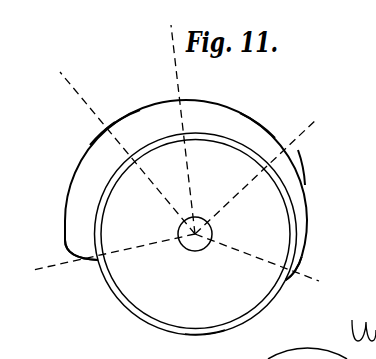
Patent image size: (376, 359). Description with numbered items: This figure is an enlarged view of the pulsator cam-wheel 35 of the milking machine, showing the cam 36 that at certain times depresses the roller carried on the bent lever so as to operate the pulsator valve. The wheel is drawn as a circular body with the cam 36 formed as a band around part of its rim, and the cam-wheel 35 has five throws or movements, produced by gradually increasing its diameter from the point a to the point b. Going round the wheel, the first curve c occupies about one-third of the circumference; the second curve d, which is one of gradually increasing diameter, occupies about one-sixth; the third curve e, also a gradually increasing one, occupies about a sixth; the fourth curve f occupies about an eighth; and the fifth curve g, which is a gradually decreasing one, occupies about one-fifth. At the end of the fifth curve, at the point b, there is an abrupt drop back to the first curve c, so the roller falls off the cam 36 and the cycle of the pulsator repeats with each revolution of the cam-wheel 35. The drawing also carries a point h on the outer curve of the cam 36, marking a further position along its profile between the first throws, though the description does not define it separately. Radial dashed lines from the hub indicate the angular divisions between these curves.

The cam-wheel 35 is at (133, 294).
The cam 36 is at (200, 107).
The point a is at (303, 266).
The point b is at (66, 243).
The first curve c is at (215, 331).
The second curve d is at (297, 164).
The third curve e is at (260, 124).
The fourth curve f is at (122, 117).
The fifth curve g is at (65, 186).
The point h on cam h is at (105, 130).